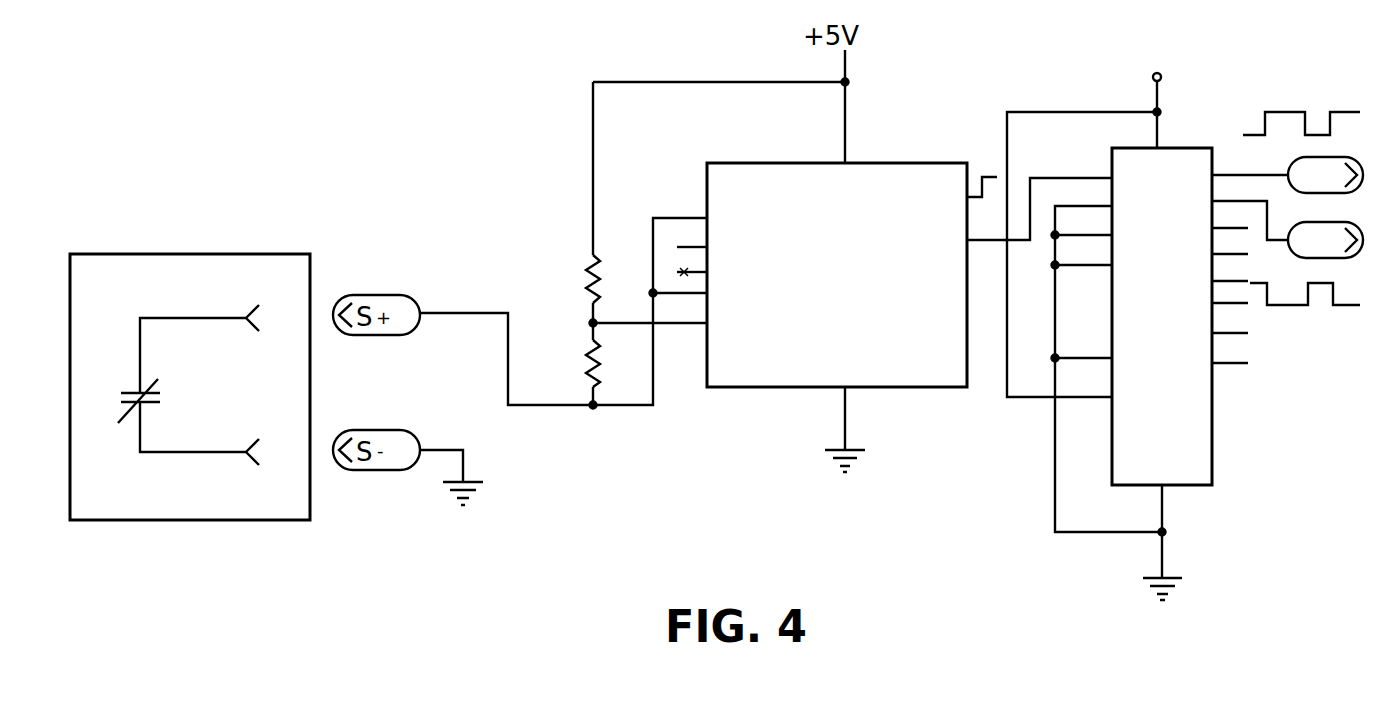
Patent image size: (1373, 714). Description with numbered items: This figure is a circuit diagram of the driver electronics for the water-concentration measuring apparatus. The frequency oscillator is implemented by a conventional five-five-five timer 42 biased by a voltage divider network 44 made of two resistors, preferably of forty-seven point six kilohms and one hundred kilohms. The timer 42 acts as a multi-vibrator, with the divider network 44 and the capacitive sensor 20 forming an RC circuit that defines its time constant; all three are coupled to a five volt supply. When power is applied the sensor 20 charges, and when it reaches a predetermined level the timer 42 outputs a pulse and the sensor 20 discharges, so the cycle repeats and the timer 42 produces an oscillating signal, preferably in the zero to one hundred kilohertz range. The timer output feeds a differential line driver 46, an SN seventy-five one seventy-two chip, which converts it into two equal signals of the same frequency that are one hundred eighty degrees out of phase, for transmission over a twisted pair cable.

The capacitive sensor 20 is at (129, 341).
The voltage divider network 44 is at (556, 256).
The '555 timer 42 is at (880, 161).
The RS-422 driver 46 is at (1188, 146).